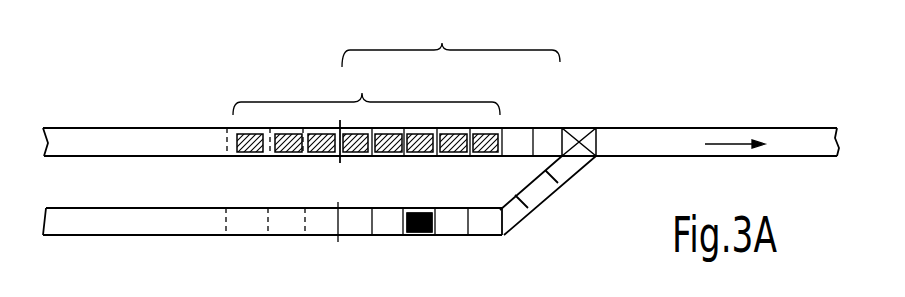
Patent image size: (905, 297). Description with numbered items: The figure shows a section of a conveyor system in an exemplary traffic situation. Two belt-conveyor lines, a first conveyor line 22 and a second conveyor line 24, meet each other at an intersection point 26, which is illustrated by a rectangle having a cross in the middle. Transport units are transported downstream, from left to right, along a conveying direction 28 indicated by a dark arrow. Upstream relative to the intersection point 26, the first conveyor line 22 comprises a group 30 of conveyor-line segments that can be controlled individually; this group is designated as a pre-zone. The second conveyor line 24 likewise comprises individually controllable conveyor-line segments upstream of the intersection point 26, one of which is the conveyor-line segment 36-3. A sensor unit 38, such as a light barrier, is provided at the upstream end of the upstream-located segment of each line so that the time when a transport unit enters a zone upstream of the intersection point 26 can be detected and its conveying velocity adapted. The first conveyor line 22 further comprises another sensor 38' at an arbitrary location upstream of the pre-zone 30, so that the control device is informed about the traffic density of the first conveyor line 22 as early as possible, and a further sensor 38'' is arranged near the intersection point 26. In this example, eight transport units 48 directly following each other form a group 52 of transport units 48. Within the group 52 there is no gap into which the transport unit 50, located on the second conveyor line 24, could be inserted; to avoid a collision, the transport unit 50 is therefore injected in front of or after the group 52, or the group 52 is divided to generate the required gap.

The first conveyor line 22 is at (205, 150).
The second conveyor line 24 is at (205, 232).
The intersection point 26 is at (593, 127).
The conveying direction 28 is at (727, 145).
The group of conveyor-line segments 30 is at (451, 39).
The conveyor-line segment 36-3 is at (418, 236).
The sensor unit 38 is at (370, 202).
The sensor 38' is at (192, 182).
The sensor 38'' is at (577, 207).
The transport unit 48 is at (490, 128).
The transport unit 50 is at (434, 215).
The group of transport units 52 is at (366, 90).